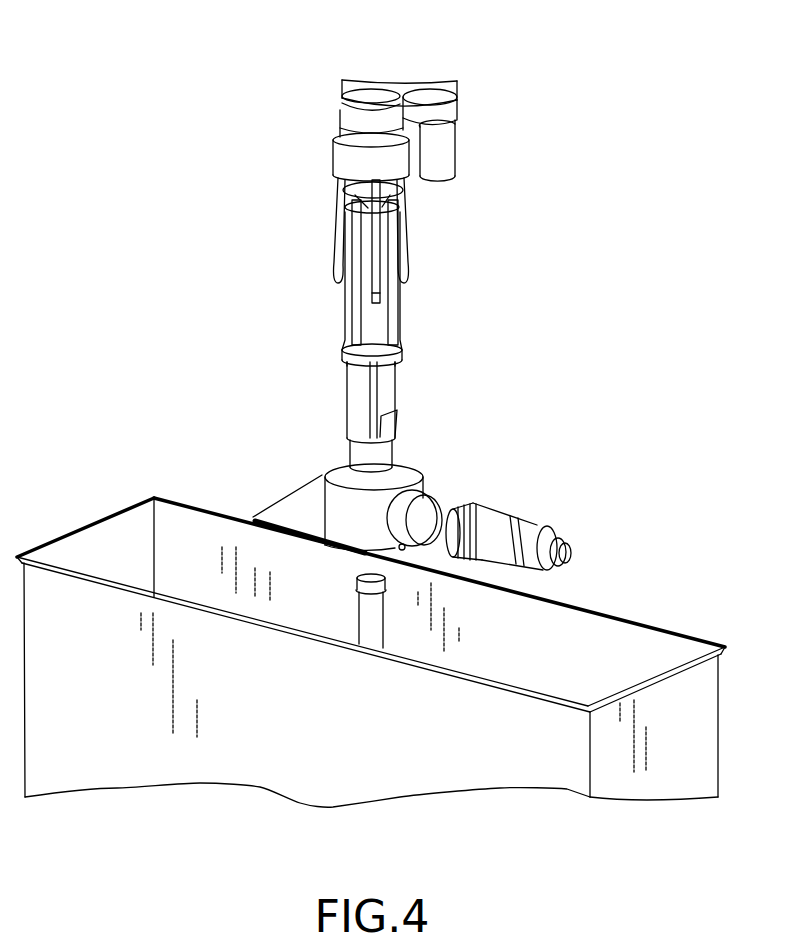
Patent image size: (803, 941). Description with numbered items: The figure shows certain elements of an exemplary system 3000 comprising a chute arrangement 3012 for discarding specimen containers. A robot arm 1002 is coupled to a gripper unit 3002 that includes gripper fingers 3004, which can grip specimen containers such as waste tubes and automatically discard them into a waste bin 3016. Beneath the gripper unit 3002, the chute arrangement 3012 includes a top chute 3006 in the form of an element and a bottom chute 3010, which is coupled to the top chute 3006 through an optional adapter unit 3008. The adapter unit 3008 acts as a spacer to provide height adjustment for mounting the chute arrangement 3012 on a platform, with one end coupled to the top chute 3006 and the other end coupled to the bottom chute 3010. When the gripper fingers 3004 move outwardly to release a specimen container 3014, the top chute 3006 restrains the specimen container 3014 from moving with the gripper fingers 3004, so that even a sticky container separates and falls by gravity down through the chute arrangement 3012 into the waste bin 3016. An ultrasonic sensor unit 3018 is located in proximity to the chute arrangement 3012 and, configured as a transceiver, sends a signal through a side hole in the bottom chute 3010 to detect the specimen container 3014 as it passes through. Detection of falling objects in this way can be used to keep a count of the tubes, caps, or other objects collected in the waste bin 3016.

The system 3000 is at (618, 97).
The robot arm 1002 is at (418, 102).
The gripper unit 3002 is at (348, 157).
The gripper fingers 3004 is at (338, 245).
The top chute 3006 is at (352, 310).
The adapter unit 3008 is at (360, 402).
The bottom chute 3010 is at (348, 508).
The chute arrangement 3012 is at (440, 313).
The specimen container 3014 is at (368, 613).
The waste bin 3016 is at (167, 617).
The ultrasonic sensor unit 3018 is at (485, 535).